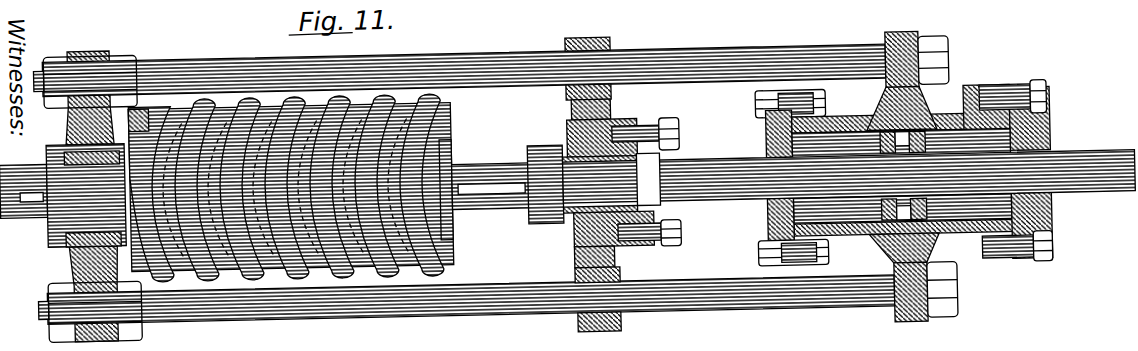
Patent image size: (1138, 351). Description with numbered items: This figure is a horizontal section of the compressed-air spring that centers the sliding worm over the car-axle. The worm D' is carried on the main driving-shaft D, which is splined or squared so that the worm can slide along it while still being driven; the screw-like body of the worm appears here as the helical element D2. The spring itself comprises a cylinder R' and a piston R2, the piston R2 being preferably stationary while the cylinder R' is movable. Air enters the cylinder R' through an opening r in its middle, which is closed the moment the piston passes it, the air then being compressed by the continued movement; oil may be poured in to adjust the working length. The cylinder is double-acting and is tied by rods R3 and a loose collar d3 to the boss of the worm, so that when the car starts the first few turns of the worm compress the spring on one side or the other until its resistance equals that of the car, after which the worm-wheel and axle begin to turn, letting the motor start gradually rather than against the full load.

The rods R3 is at (189, 53).
The piston R2 is at (712, 155).
The cylinder R' is at (904, 177).
The opening r is at (875, 121).
The main driving-shaft D is at (265, 204).
The worm D' is at (553, 204).
The screw conveyor D2 is at (290, 268).
The loose collar d3 is at (75, 116).